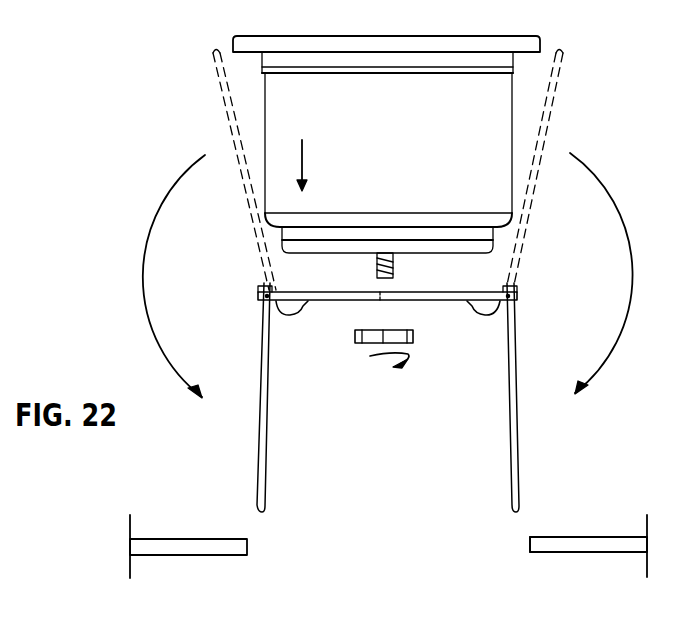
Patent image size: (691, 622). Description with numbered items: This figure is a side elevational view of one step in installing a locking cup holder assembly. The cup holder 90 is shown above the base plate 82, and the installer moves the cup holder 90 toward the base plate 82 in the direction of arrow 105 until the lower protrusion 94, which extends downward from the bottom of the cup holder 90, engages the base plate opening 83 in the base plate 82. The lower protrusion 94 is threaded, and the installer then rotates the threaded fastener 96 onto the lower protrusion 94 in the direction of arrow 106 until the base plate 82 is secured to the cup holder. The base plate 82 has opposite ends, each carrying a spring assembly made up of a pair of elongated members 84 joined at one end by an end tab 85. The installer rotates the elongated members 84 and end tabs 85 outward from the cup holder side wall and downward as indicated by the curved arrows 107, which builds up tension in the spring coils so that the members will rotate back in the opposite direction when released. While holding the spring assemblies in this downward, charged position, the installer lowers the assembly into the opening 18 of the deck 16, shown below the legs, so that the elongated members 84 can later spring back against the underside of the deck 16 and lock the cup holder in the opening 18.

The deck 16 is at (190, 546).
The opening 18 is at (528, 545).
The base plate 82 is at (434, 298).
The base plate opening 83 is at (374, 298).
The elongated member 84 is at (265, 428).
The end tab 85 is at (262, 512).
The cup holder 90 is at (462, 118).
The lower protrusion 94 is at (394, 268).
The threaded fastener 96 is at (355, 334).
The arrow 105 is at (305, 158).
The arrow 106 is at (416, 366).
The arrow 107 is at (145, 246).